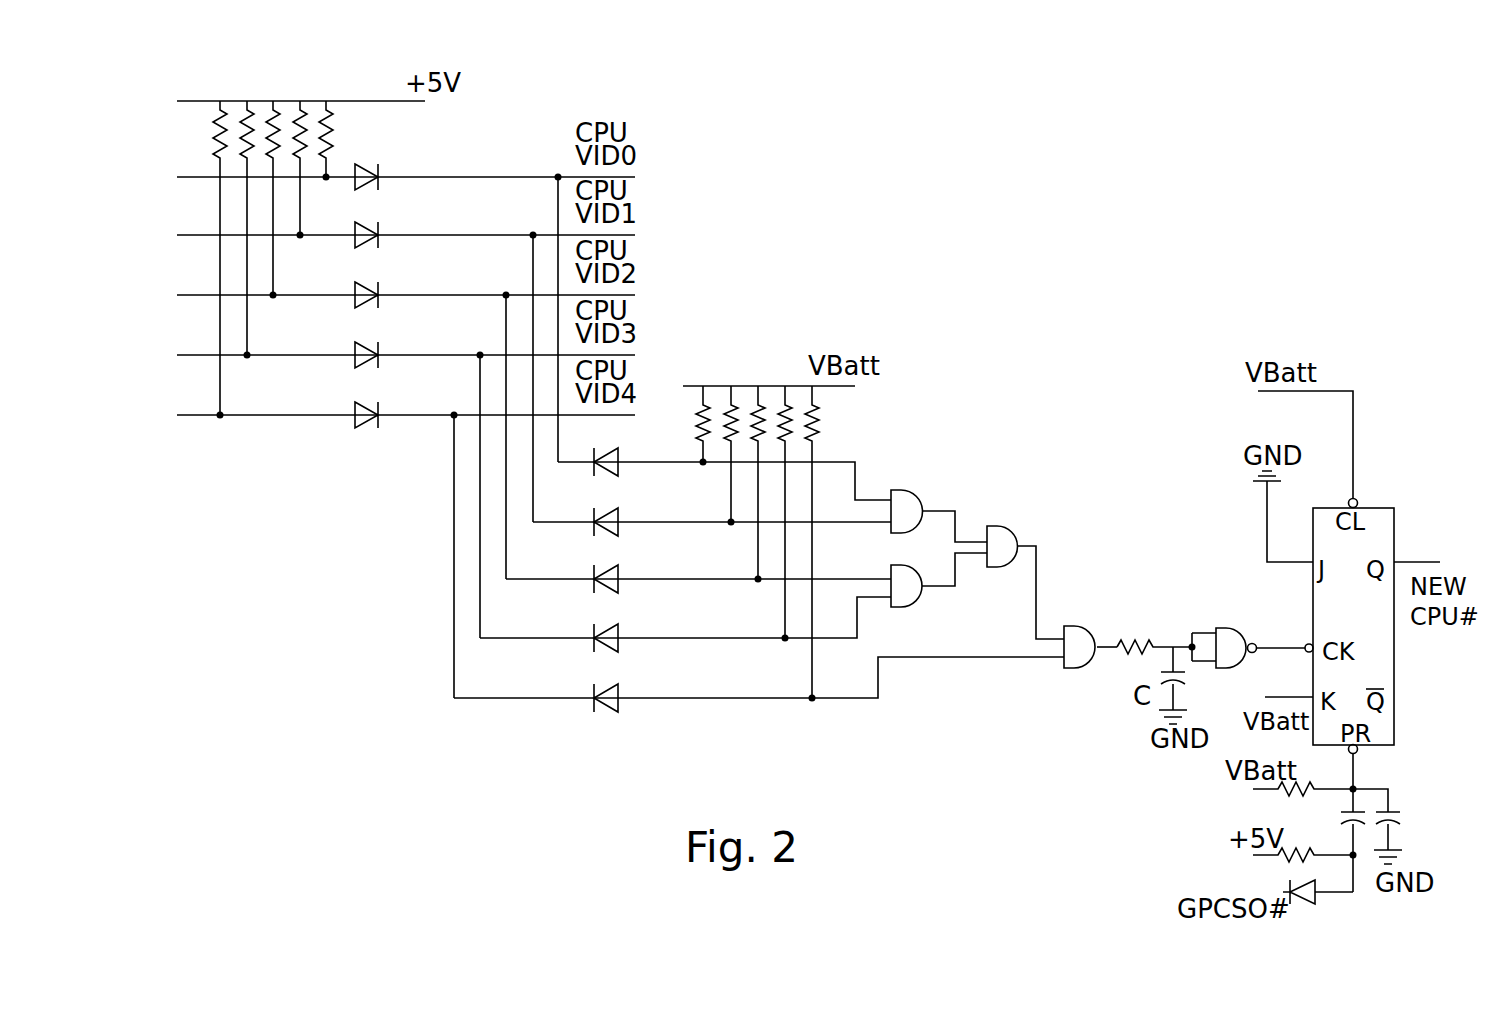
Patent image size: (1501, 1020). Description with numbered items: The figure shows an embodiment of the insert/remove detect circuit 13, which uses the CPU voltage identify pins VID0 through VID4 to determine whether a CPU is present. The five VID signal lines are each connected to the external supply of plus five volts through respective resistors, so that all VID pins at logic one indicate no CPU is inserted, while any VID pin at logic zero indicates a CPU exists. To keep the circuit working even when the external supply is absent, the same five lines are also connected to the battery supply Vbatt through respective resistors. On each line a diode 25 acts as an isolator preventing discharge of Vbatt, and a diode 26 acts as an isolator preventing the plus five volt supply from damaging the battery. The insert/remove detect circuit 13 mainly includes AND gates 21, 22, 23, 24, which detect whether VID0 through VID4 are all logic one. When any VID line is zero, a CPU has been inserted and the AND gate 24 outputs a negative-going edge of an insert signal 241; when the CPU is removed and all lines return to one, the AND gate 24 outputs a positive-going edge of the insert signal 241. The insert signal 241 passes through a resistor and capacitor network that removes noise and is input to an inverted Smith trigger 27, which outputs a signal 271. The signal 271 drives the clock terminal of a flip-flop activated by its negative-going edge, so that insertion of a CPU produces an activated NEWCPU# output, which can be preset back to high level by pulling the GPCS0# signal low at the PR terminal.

The insert/remove detect circuit 13 is at (896, 412).
The AND gate 21 is at (913, 488).
The AND gate 22 is at (906, 608).
The AND gate 23 is at (1007, 525).
The AND gate 24 is at (1084, 625).
The insert signal 241 is at (1121, 640).
The diode 25 is at (373, 166).
The diode 26 is at (611, 456).
The inverted Smith trigger 27 is at (1217, 627).
The signal 271 is at (1296, 646).